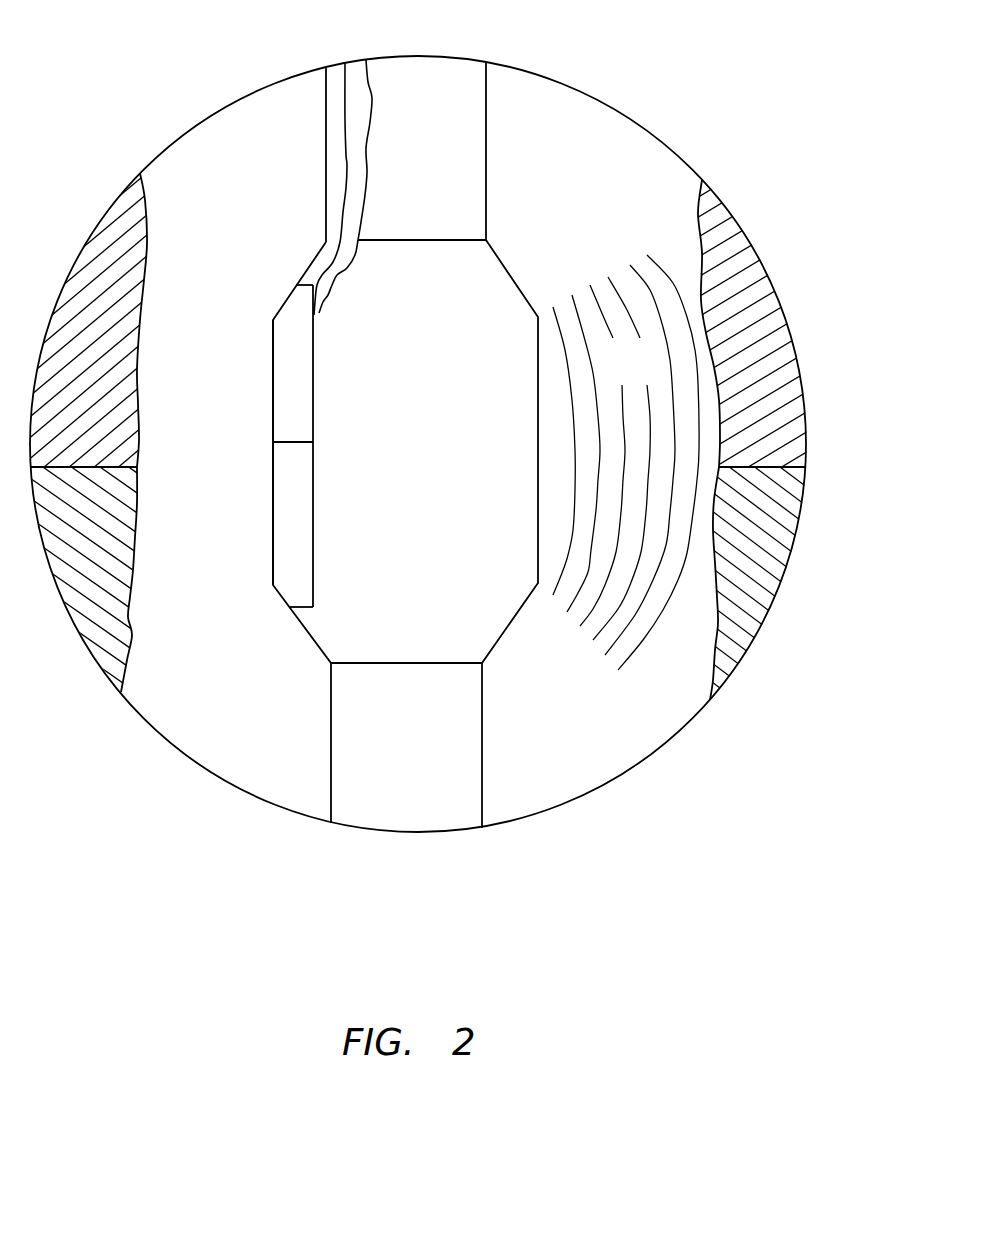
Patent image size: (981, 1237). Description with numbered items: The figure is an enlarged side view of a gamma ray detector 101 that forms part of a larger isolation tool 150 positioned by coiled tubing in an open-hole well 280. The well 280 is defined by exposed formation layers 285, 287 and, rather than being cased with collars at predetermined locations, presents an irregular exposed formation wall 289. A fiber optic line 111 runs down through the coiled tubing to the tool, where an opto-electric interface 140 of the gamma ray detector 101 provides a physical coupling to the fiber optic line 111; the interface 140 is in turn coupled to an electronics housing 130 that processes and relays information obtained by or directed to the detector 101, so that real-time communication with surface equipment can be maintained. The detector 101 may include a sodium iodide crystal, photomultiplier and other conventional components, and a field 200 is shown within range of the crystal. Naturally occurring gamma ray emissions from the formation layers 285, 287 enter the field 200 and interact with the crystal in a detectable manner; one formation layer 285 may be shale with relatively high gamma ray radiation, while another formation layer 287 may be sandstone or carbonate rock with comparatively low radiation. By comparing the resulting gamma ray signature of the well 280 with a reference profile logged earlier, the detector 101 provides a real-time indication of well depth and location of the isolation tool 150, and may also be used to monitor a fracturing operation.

The gamma ray detector 101 is at (502, 603).
The fiber optic line 111 is at (343, 155).
The electronics housing 130 is at (292, 584).
The opto-electric interface 140 is at (290, 368).
The isolation tool 150 is at (491, 100).
The field 200 is at (657, 377).
The well 280 is at (595, 163).
The formation layer 285 is at (108, 392).
The formation layer 287 is at (777, 525).
The exposed formation wall 289 is at (137, 498).